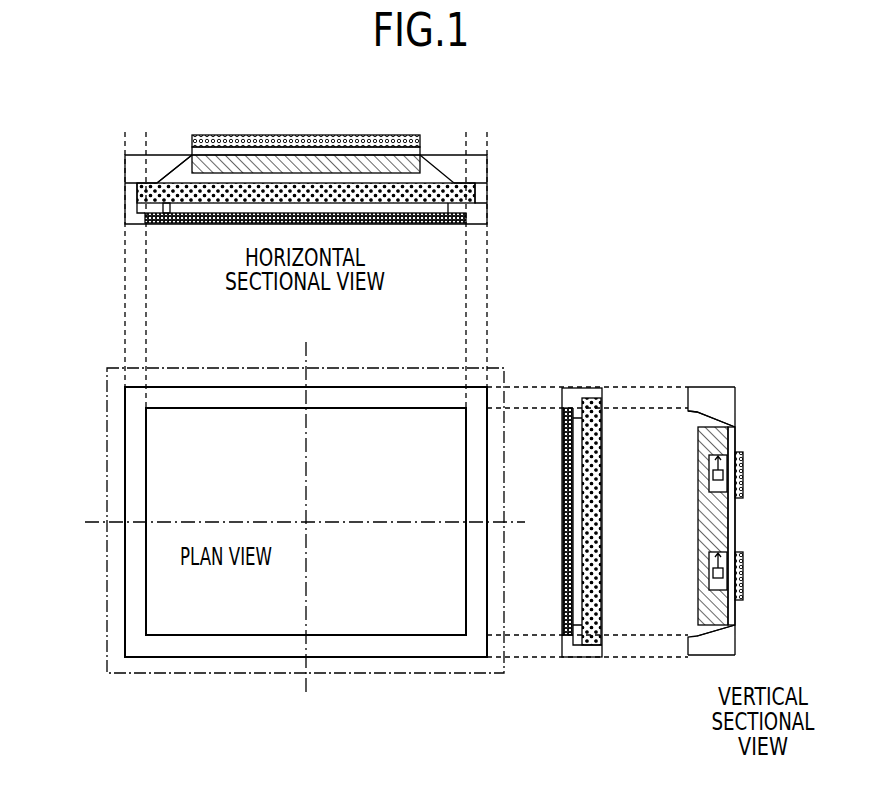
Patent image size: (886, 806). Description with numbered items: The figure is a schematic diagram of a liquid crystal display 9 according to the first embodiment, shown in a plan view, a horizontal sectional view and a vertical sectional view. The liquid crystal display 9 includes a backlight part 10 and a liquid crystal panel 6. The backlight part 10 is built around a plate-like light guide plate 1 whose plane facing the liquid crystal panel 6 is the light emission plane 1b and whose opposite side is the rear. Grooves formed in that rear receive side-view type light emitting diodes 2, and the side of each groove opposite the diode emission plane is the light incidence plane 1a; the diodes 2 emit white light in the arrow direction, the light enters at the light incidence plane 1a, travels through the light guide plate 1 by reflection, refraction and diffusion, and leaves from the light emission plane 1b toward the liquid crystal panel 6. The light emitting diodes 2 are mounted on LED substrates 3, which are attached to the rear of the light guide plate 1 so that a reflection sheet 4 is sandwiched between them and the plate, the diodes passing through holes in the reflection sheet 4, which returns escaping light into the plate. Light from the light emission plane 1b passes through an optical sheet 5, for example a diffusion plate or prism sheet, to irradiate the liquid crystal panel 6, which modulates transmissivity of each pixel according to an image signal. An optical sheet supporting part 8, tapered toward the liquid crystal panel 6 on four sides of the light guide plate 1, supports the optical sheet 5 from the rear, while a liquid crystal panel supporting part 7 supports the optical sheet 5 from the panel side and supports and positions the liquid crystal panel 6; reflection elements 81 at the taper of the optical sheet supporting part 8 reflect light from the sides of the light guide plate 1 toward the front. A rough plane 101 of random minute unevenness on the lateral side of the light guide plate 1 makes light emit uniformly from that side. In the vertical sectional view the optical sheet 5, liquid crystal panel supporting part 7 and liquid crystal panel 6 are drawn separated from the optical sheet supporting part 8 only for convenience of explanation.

The light guide plate 1 is at (373, 160).
The light incidence plane 1a is at (704, 450).
The light emission plane 1b is at (705, 584).
The light emitting diode 2 is at (713, 477).
The LED substrate 3 is at (330, 143).
The reflection sheet 4 is at (270, 152).
The optical sheet 5 is at (470, 193).
The liquid crystal panel 6 is at (433, 223).
The liquid crystal panel supporting part 7 is at (138, 222).
The optical sheet supporting part 8 is at (475, 160).
The reflection element 81 is at (174, 206).
The rough plane 101 is at (180, 182).
The backlight part 10 is at (108, 123).
The liquid crystal display 9 is at (145, 675).